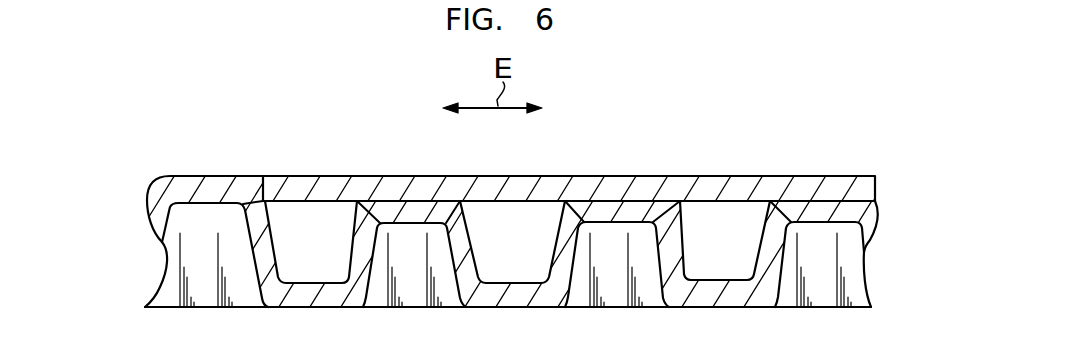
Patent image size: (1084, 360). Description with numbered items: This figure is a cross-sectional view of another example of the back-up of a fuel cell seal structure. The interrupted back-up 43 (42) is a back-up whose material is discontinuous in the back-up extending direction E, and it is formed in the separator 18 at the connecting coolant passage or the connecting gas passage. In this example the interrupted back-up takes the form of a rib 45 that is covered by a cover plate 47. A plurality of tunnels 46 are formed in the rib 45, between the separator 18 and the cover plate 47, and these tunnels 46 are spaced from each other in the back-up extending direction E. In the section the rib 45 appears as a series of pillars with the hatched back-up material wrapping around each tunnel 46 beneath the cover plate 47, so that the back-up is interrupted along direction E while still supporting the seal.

The separator 18 is at (505, 281).
The interrupted back-up 42 is at (522, 240).
The interrupted back-up 43 is at (352, 228).
The rib 45 is at (125, 177).
The tunnels 46 is at (308, 235).
The cover plate 47 is at (817, 176).